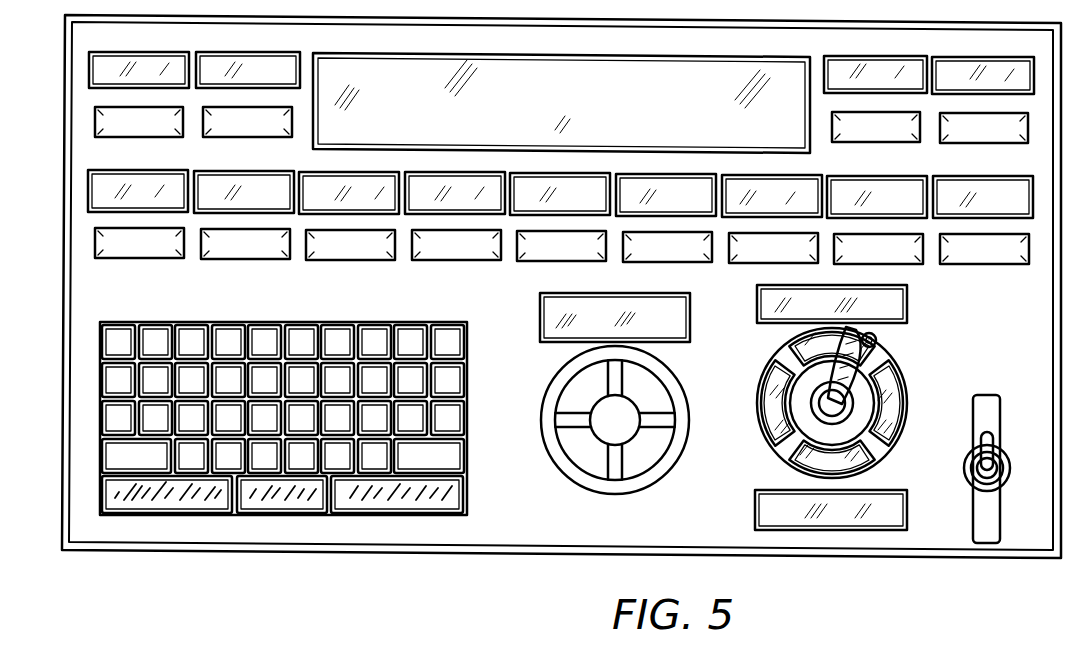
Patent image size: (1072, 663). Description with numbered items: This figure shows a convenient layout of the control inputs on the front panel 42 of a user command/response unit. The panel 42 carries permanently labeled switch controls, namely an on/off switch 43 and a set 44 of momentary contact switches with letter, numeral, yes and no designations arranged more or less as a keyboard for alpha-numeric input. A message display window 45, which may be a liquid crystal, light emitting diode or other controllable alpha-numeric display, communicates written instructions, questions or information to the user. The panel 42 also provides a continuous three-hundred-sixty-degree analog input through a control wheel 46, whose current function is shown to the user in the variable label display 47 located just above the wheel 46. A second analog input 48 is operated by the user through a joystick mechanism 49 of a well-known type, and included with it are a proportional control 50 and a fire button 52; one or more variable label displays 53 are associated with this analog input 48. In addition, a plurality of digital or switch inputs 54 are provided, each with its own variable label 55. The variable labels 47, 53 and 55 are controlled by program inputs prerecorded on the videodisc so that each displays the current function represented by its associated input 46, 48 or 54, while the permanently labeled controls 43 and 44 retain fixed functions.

The front panel 42 is at (393, 553).
The on/off switch 43 is at (972, 468).
The set of momentary contact switches 44 is at (255, 325).
The message display window 45 is at (775, 72).
The control wheel 46 is at (668, 457).
The variable label display 47 is at (552, 317).
The second analog input 48 is at (760, 362).
The joystick mechanism 49 is at (887, 365).
The proportional control 50 is at (815, 330).
The fire button 52 is at (876, 336).
The variable label displays 53 is at (760, 300).
The digital or switch inputs 54 is at (232, 125).
The variable label 55 is at (225, 65).